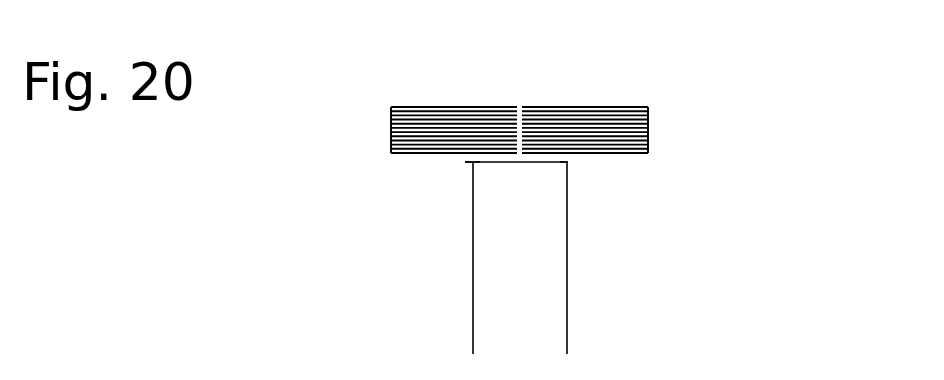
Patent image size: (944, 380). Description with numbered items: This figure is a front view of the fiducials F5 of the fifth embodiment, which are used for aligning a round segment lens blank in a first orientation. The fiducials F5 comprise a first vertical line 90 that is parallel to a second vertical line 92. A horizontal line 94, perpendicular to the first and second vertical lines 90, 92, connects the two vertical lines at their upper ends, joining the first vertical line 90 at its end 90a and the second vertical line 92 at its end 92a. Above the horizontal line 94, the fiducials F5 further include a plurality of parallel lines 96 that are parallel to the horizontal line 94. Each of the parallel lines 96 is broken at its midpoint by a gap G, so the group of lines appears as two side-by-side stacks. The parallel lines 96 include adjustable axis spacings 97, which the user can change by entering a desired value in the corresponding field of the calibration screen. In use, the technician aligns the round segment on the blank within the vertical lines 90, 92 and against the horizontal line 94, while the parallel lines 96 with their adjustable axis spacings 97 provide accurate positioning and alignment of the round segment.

The gap G is at (517, 103).
The parallel lines 96 is at (599, 97).
The adjustable axis spacings 97 is at (386, 133).
The horizontal line 94 is at (490, 163).
The first vertical line 90 is at (470, 263).
The end of first vertical line 90a is at (469, 164).
The second vertical line 92 is at (569, 265).
The end of second vertical line 92a is at (569, 164).
The fiducials F5 is at (754, 82).